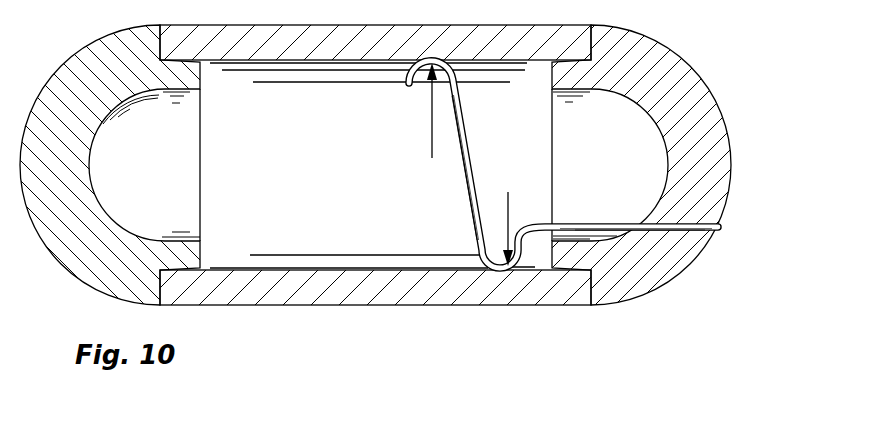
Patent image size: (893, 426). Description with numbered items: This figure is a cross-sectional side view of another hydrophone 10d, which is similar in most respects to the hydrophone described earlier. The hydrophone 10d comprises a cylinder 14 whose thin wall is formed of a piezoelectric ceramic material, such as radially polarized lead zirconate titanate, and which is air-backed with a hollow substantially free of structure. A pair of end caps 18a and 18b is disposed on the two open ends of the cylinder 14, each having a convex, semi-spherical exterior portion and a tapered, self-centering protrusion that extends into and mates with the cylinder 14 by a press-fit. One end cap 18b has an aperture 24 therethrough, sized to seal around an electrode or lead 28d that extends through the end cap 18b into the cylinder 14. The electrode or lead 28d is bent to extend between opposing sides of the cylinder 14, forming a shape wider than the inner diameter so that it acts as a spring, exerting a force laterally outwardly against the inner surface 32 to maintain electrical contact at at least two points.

The hydrophone 10d is at (380, 211).
The cylinder 14 is at (515, 292).
The end cap 18a is at (58, 242).
The end cap 18b is at (667, 268).
The aperture 24 is at (683, 232).
The electrode or lead 28d is at (462, 173).
The inner surface 32 is at (283, 305).